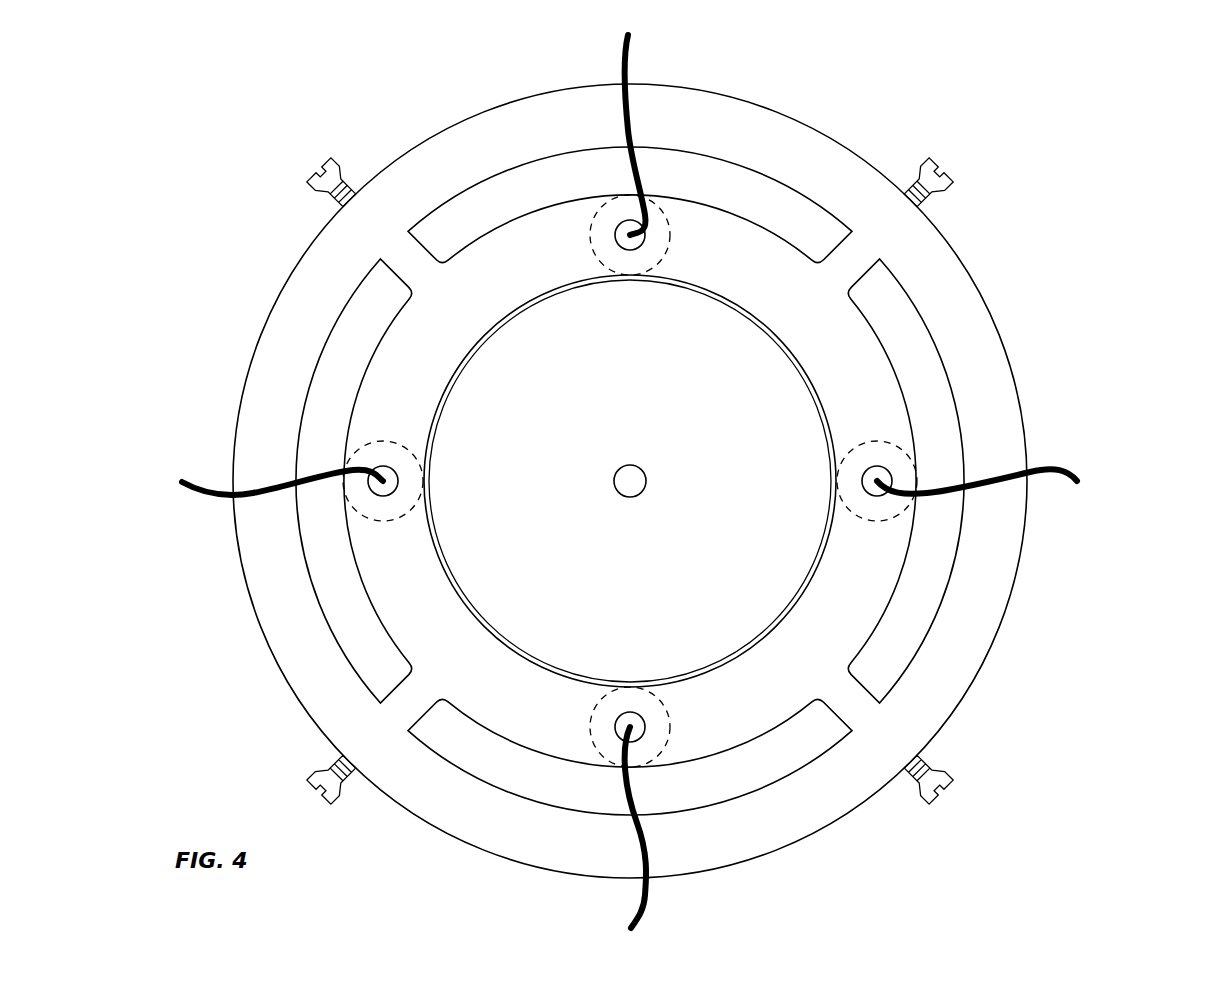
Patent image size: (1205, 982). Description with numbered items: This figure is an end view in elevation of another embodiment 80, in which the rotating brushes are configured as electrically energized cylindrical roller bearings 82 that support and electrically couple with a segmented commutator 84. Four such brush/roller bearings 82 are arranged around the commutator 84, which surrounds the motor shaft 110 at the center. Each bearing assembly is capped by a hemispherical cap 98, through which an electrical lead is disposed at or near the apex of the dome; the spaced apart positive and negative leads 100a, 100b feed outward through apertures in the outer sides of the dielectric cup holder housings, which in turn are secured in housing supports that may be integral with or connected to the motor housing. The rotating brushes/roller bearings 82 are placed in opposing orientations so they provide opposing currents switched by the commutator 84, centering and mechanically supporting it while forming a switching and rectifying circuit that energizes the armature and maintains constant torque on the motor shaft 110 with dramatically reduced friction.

The embodiment 80 is at (150, 130).
The cylindrical roller bearings 82 is at (626, 219).
The segmented commutator 84 is at (783, 410).
The hemispherical cap 98 is at (592, 206).
The positive lead 100a is at (208, 490).
The negative lead 100b is at (634, 72).
The motor shaft 110 is at (630, 465).